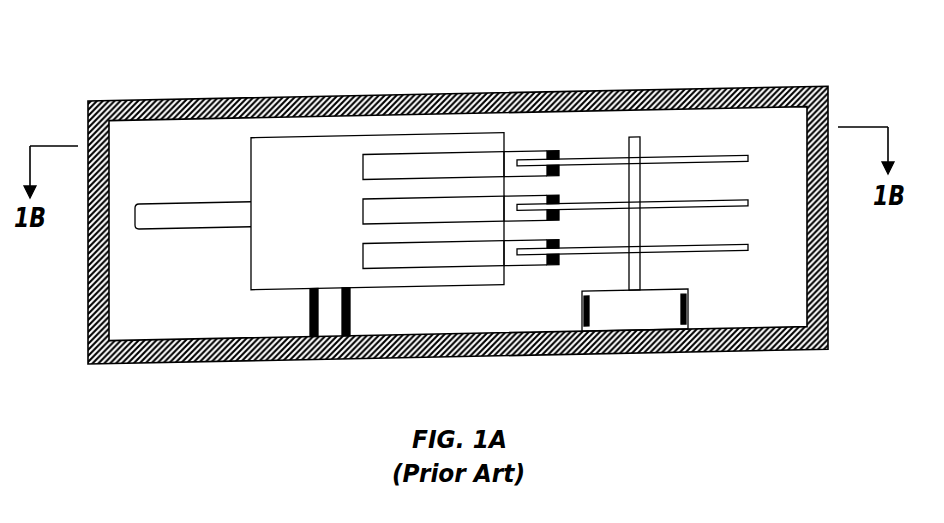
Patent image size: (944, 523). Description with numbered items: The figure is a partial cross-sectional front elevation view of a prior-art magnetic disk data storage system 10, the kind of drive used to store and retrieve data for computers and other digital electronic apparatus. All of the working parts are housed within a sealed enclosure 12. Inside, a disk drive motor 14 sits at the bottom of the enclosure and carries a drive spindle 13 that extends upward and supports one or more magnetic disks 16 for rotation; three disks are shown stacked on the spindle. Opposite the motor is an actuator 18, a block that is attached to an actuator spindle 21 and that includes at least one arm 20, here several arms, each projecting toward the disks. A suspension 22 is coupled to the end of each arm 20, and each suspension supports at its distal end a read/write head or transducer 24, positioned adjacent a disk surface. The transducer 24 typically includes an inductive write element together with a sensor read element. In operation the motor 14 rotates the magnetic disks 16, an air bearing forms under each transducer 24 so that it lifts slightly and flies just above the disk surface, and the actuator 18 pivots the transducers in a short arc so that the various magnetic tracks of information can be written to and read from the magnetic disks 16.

The magnetic disk data storage system 10 is at (762, 66).
The sealed enclosure 12 is at (828, 273).
The drive spindle 13 is at (641, 266).
The disk drive motor 14 is at (637, 320).
The magnetic disk 16 is at (740, 155).
The actuator 18 is at (293, 138).
The arm 20 is at (469, 152).
The actuator spindle 21 is at (309, 320).
The suspension 22 is at (537, 150).
The read/write head or transducer 24 is at (559, 151).